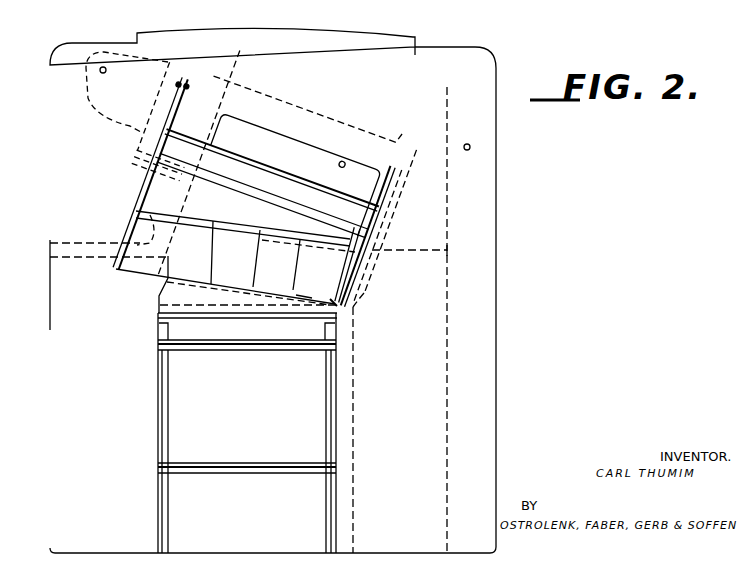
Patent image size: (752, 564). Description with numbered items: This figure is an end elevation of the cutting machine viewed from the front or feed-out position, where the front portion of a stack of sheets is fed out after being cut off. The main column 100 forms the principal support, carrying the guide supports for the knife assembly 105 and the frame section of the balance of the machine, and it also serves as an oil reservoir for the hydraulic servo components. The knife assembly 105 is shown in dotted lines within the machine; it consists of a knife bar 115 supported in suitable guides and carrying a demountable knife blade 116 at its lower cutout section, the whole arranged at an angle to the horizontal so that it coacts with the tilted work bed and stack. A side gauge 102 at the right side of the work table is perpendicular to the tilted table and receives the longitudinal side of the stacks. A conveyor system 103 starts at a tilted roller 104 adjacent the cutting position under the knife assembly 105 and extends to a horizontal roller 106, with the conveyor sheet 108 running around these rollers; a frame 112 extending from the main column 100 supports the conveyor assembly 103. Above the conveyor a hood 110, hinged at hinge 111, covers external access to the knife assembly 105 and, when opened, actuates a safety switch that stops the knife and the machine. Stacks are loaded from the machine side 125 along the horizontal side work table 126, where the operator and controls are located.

The main column 100 is at (408, 408).
The side gauge 102 is at (346, 264).
The conveyor system 103 is at (207, 429).
The tilted roller 104 is at (303, 297).
The knife assembly 105 is at (272, 168).
The horizontal roller 106 is at (217, 332).
The conveyor sheet 108 is at (158, 293).
The hood 110 is at (250, 192).
The hinge 111 is at (254, 211).
The frame 112 is at (227, 475).
The knife bar 115 is at (137, 153).
The knife blade 116 is at (216, 198).
The machine side 125 is at (50, 278).
The side work table 126 is at (90, 243).